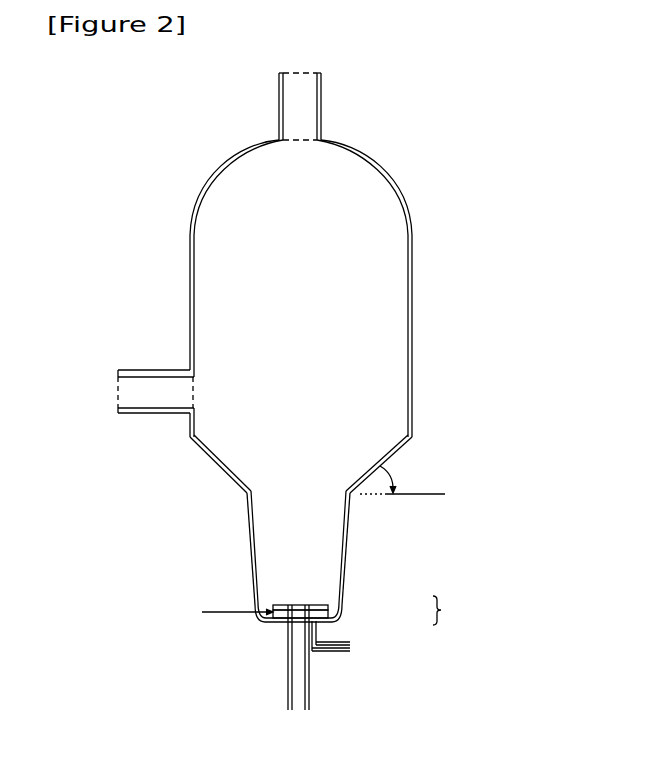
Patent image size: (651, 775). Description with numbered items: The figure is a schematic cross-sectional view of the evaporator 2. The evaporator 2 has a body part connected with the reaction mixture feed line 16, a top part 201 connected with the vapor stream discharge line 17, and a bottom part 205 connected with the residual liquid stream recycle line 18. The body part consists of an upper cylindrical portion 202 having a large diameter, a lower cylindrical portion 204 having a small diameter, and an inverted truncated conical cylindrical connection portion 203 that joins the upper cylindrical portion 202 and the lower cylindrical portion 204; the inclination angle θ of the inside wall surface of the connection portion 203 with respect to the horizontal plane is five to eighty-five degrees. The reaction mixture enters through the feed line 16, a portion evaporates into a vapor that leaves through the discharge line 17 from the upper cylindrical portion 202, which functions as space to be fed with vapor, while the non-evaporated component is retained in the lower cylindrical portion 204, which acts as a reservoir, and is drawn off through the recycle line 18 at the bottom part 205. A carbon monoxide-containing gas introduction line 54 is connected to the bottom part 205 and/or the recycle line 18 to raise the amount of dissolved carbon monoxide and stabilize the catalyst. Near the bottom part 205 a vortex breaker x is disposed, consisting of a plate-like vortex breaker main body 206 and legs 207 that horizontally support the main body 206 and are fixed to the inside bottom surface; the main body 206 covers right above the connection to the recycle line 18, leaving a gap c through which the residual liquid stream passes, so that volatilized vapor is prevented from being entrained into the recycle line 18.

The evaporator 2 is at (308, 304).
The reaction mixture feed line 16 is at (160, 370).
The vapor stream discharge line 17 is at (322, 118).
The residual liquid stream recycle line 18 is at (290, 678).
The carbon monoxide-containing gas introduction line 54 is at (332, 652).
The top part 201 is at (380, 152).
The upper cylindrical portion 202 is at (413, 272).
The inverted truncated conical cylindrical connection portion 203 is at (405, 448).
The lower cylindrical portion 204 is at (348, 562).
The bottom part 205 is at (280, 628).
The vortex breaker main body 206 is at (342, 606).
The legs 207 is at (322, 613).